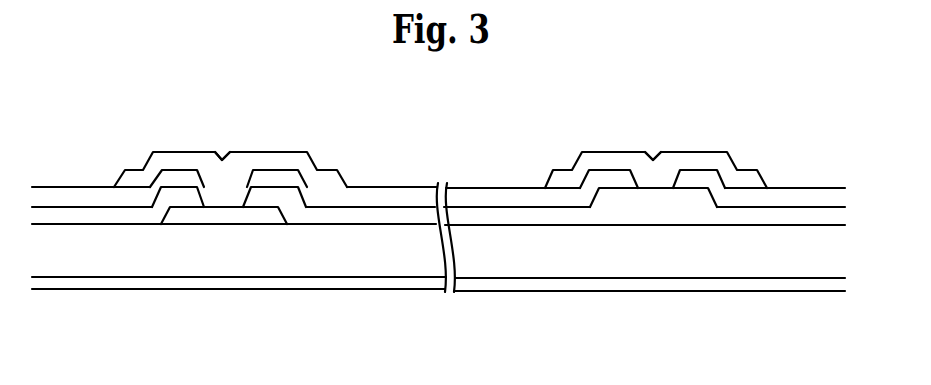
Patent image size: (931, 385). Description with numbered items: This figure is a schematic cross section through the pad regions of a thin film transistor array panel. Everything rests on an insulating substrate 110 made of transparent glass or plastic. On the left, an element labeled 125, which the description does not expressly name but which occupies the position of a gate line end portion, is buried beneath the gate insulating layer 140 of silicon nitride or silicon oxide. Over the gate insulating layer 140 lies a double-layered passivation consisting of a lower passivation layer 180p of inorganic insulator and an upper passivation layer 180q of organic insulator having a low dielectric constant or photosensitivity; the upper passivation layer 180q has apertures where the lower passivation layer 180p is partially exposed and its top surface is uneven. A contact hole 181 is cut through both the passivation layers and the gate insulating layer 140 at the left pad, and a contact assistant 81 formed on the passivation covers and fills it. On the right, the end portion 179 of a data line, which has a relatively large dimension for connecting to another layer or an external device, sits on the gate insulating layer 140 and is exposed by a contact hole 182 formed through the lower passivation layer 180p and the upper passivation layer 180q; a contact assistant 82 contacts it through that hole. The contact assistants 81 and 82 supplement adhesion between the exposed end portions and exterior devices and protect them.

The insulating substrate 110 is at (157, 282).
The end portion of gate line (gate pad) 125 is at (226, 217).
The gate insulating layer 140 is at (72, 215).
The end portion of data line 179 is at (660, 197).
The lower passivation layer 180p is at (355, 200).
The upper passivation layer 180q is at (565, 197).
The contact assistant 81 is at (162, 158).
The contact assistant 82 is at (706, 160).
The contact hole 181 is at (232, 134).
The contact hole 182 is at (648, 134).